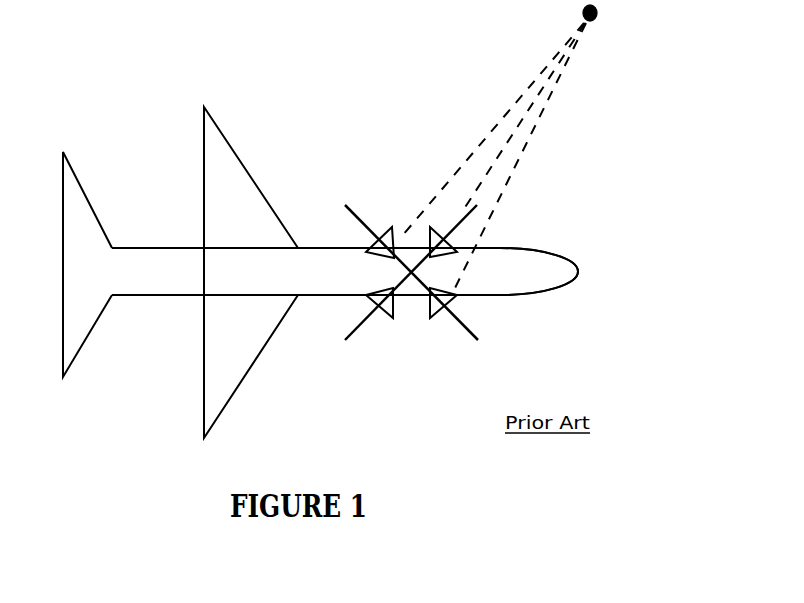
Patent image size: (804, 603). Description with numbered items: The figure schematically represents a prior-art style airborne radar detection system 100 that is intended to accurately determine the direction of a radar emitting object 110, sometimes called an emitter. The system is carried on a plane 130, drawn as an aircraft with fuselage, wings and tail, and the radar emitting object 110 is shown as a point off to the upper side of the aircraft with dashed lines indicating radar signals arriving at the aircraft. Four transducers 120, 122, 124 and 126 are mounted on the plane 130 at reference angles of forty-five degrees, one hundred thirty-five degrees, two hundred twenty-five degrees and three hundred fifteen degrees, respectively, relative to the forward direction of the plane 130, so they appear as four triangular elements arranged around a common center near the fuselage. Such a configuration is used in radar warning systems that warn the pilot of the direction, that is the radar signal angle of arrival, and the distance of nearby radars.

The airborne radar detection system 100 is at (372, 370).
The radar emitting object 110 is at (602, 12).
The transducer 120 is at (449, 301).
The transducer 122 is at (367, 302).
The transducer 124 is at (388, 232).
The transducer 126 is at (455, 239).
The plane 130 is at (568, 260).